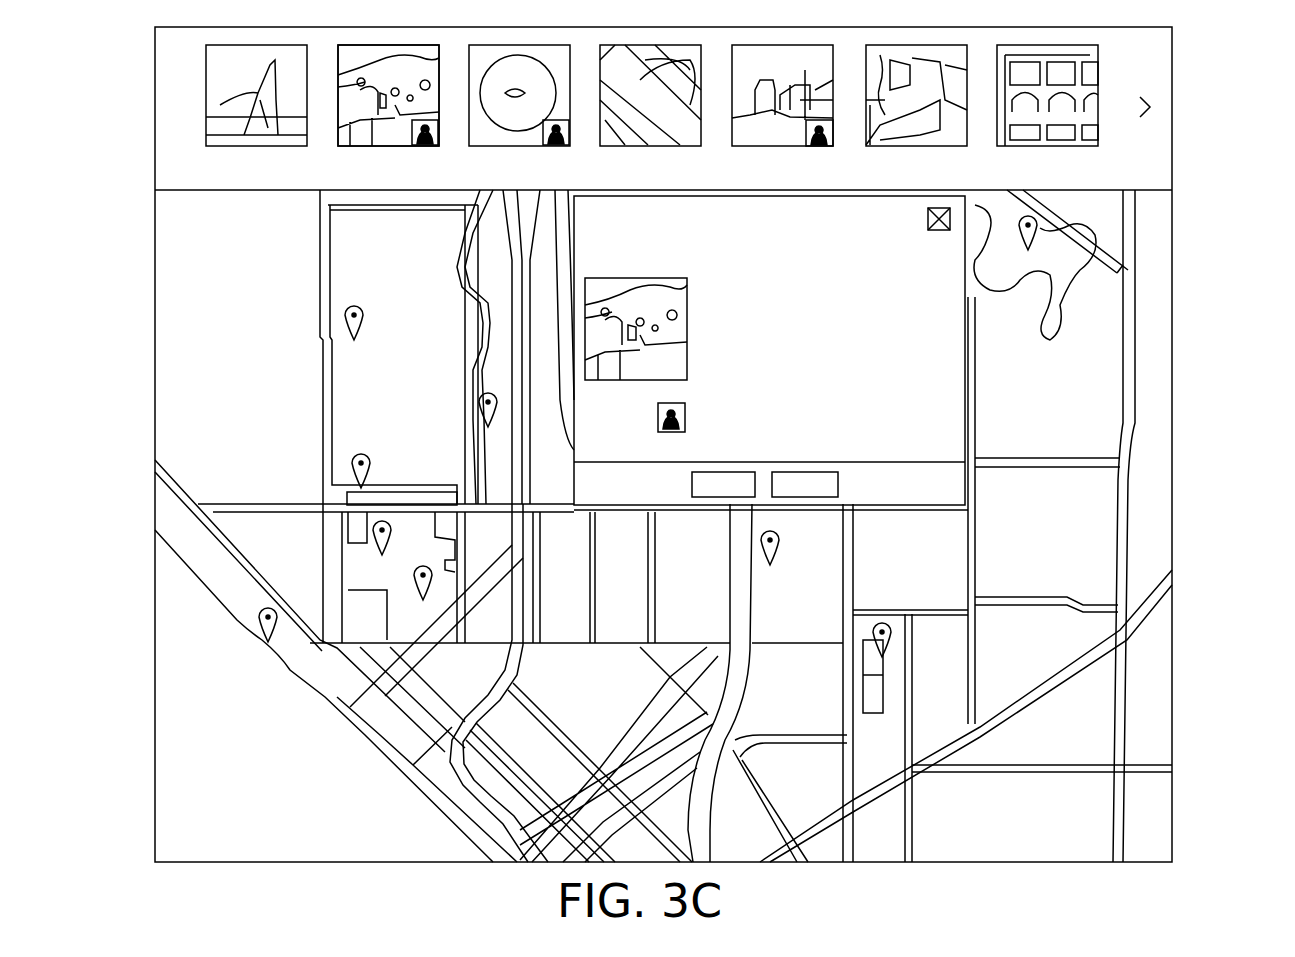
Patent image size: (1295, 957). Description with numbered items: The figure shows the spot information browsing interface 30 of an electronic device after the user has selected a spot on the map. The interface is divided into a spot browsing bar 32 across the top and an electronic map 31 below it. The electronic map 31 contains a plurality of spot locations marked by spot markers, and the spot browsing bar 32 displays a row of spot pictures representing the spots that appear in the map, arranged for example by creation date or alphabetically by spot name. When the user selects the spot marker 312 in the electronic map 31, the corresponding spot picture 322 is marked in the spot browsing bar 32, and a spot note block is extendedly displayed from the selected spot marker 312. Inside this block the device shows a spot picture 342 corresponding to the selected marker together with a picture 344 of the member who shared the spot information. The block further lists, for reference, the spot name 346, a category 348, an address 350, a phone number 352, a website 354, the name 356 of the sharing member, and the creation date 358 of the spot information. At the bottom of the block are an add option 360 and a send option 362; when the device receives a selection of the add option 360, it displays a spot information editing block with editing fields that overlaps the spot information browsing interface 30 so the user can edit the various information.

The spot information browsing interface 30 is at (1172, 78).
The electronic map 31 is at (1162, 692).
The spot browsing bar 32 is at (1145, 152).
The spot picture 322 is at (363, 45).
The spot marker 312 is at (779, 542).
The spot picture 342 is at (585, 322).
The picture of the member sharing the spot information 344 is at (655, 418).
The spot name 346 is at (592, 222).
The category 348 is at (585, 262).
The address 350 is at (882, 290).
The phone number 352 is at (820, 356).
The website 354 is at (795, 378).
The name of the member sharing the spot information 356 is at (855, 412).
The creation date 358 is at (845, 437).
The add option 360 is at (715, 497).
The send option 362 is at (838, 485).